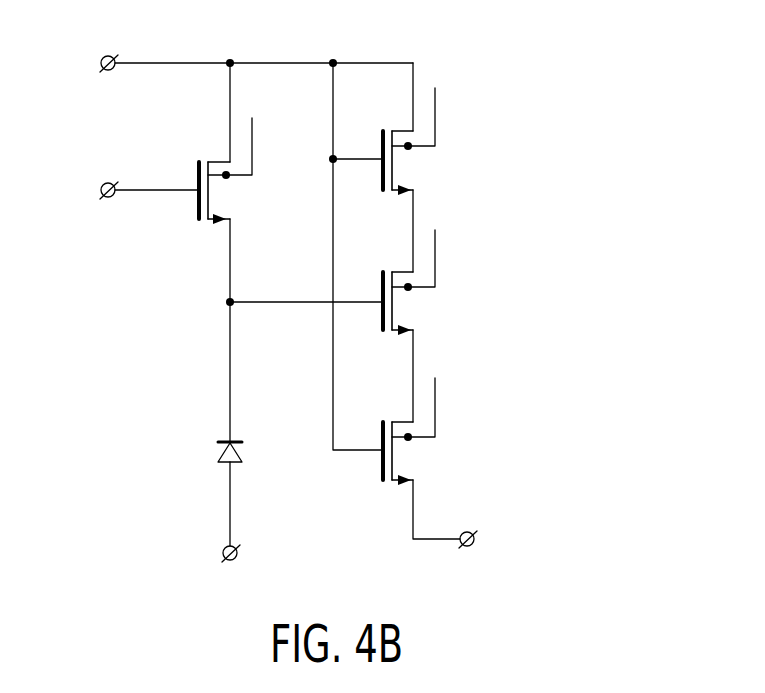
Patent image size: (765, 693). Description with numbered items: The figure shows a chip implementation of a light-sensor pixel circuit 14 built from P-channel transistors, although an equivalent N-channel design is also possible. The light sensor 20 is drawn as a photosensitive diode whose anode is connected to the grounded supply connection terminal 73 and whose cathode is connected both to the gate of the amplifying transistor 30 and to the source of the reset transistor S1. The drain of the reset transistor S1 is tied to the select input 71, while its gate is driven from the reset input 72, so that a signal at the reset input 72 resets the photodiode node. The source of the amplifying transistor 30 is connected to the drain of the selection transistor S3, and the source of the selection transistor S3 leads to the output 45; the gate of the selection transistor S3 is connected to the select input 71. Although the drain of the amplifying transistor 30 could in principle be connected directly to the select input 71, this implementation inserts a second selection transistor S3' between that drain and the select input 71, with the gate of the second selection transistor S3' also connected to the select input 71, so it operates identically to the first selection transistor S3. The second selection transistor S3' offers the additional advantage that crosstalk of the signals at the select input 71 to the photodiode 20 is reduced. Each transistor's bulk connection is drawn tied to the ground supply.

The output stage circuit 14 is at (581, 110).
The light sensor 20 is at (217, 451).
The amplifying transistor 30 is at (405, 311).
The output 45 is at (477, 541).
The select input 71 is at (102, 62).
The reset input 72 is at (102, 190).
The supply connection terminal 73 is at (238, 557).
The reset transistor S1 is at (197, 213).
The selection transistor S3 is at (431, 429).
The second selection transistor S3' is at (431, 138).